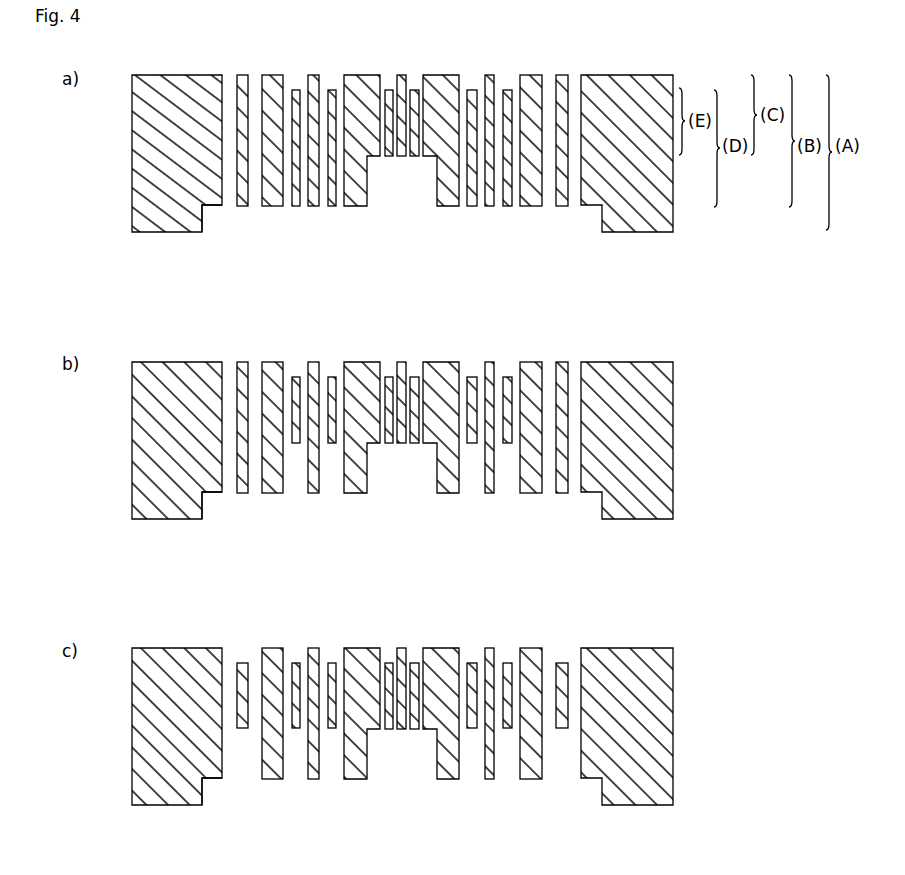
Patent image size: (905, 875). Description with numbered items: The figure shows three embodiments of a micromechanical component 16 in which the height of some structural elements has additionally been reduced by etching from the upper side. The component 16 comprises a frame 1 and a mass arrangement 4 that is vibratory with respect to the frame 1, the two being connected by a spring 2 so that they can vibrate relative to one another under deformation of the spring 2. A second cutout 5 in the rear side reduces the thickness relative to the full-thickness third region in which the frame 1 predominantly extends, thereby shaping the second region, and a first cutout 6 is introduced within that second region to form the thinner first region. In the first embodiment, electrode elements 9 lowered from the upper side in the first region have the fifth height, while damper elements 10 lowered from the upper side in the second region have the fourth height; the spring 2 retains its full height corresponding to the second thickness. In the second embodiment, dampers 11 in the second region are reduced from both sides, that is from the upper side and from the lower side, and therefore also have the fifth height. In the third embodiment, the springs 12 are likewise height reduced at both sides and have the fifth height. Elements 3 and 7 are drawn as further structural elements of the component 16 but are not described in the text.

In FIG. 4a, the frame 1 is at (172, 84).
In FIG. 4b, the frame 1 is at (188, 370).
In FIG. 4c, the frame 1 is at (188, 656).
In FIG. 4a, the spring 2 is at (243, 78).
In FIG. 4b, the spring 2 is at (241, 364).
In FIG. 4a, the third layer 3 is at (402, 78).
In FIG. 4b, the third layer 3 is at (402, 366).
In FIG. 4c, the third layer 3 is at (402, 652).
In FIG. 4a, the mass arrangement 4 is at (440, 80).
In FIG. 4b, the mass arrangement 4 is at (440, 366).
In FIG. 4c, the mass arrangement 4 is at (440, 652).
In FIG. 4a, the second cutout 5 is at (212, 218).
In FIG. 4b, the second cutout 5 is at (212, 505).
In FIG. 4c, the second cutout 5 is at (212, 791).
In FIG. 4a, the first cutout 6 is at (378, 185).
In FIG. 4b, the first cutout 6 is at (378, 472).
In FIG. 4c, the first cutout 6 is at (378, 758).
In FIG. 4a, the seventh layer 7 is at (488, 80).
In FIG. 4b, the seventh layer 7 is at (488, 366).
In FIG. 4c, the seventh layer 7 is at (488, 652).
In FIG. 4a, the electrode elements 9 is at (388, 92).
In FIG. 4b, the electrode elements 9 is at (388, 378).
In FIG. 4c, the electrode elements 9 is at (388, 664).
In FIG. 4a, the damper elements 10 is at (297, 92).
In FIG. 4b, the dampers 11 is at (332, 378).
In FIG. 4c, the dampers 11 is at (332, 664).
In FIG. 4c, the springs 12 is at (242, 664).
In FIG. 4a, the component 16 is at (680, 221).
In FIG. 4b, the component 16 is at (680, 484).
In FIG. 4c, the component 16 is at (680, 762).